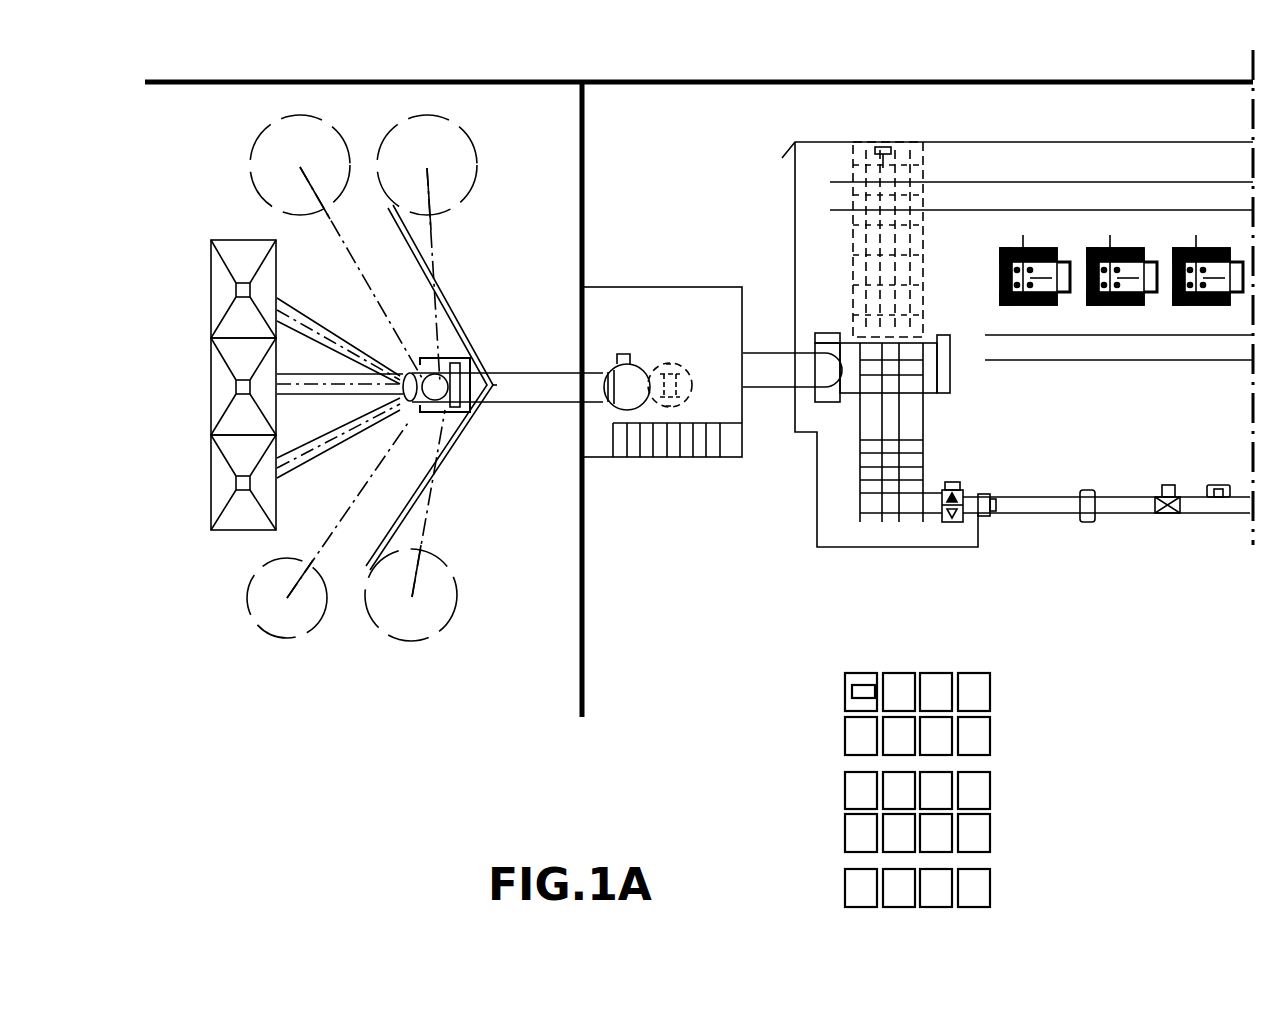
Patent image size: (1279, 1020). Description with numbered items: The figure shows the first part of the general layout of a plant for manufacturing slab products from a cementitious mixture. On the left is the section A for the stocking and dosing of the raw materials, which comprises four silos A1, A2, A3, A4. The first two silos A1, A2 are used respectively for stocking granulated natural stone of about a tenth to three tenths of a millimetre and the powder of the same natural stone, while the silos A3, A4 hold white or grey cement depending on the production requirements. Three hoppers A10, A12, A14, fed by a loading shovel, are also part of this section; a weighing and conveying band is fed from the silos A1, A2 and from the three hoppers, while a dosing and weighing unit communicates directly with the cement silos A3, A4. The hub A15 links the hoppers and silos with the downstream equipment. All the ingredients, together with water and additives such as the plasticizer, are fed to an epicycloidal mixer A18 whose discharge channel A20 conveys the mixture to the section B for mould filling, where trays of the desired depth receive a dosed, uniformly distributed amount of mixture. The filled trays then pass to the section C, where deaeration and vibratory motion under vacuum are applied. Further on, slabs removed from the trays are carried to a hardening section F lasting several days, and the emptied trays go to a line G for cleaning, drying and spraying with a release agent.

The section for stocking and dosing of raw materials A is at (300, 697).
The silo A1 is at (268, 637).
The silo A2 is at (413, 652).
The silo A3 is at (258, 140).
The silo A4 is at (473, 152).
The hopper A10 is at (217, 293).
The hopper A12 is at (213, 400).
The hopper A14 is at (220, 495).
The hub bracket A15 is at (452, 360).
The epicycloidal mixer A18 is at (637, 363).
The discharge channel A20 is at (773, 392).
The section for mould filling B is at (848, 412).
The section for deaeration and vibration under vacuum C is at (1158, 245).
The hardening section F is at (1025, 798).
The tray cleaning line G is at (1167, 528).